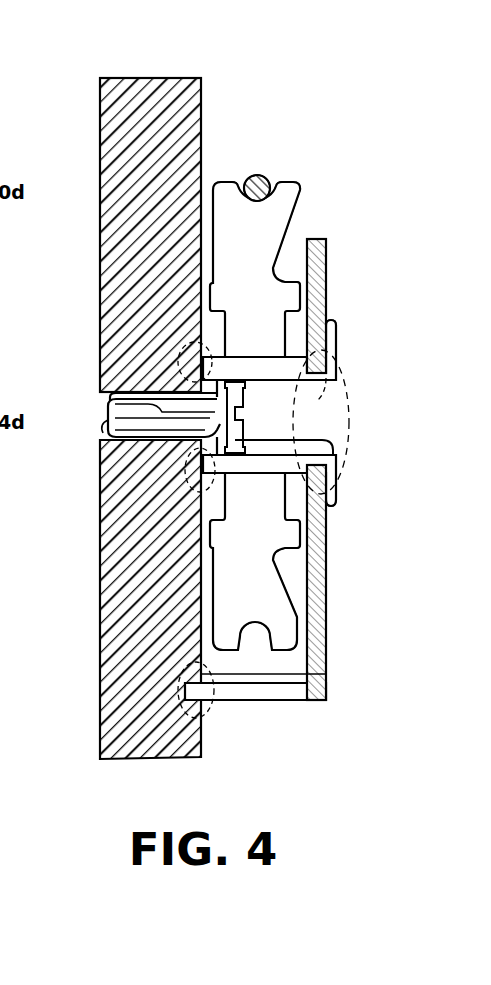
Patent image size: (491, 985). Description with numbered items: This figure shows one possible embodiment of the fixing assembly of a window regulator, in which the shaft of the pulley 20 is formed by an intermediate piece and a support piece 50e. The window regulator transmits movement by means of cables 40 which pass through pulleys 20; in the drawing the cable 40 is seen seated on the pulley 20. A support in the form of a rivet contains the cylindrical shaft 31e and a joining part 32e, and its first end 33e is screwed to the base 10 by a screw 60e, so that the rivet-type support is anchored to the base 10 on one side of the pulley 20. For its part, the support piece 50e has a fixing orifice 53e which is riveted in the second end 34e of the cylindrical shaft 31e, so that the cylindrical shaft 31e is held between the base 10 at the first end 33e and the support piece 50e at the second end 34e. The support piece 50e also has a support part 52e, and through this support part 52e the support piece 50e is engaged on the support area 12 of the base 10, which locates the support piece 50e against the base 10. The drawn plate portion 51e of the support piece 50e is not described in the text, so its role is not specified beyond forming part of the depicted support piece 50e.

The base 10 is at (165, 108).
The pulley 20 is at (268, 235).
The cable 40 is at (255, 175).
The support piece 50e is at (337, 267).
The plate 51e is at (316, 291).
The fixing orifice 53e is at (318, 402).
The second end 34e is at (347, 417).
The cylindrical shaft 31e is at (285, 434).
The first end 33e is at (193, 358).
The screw 60e is at (150, 396).
The joining part 32e is at (107, 395).
The support area 12 is at (327, 675).
The support part 52e is at (213, 698).